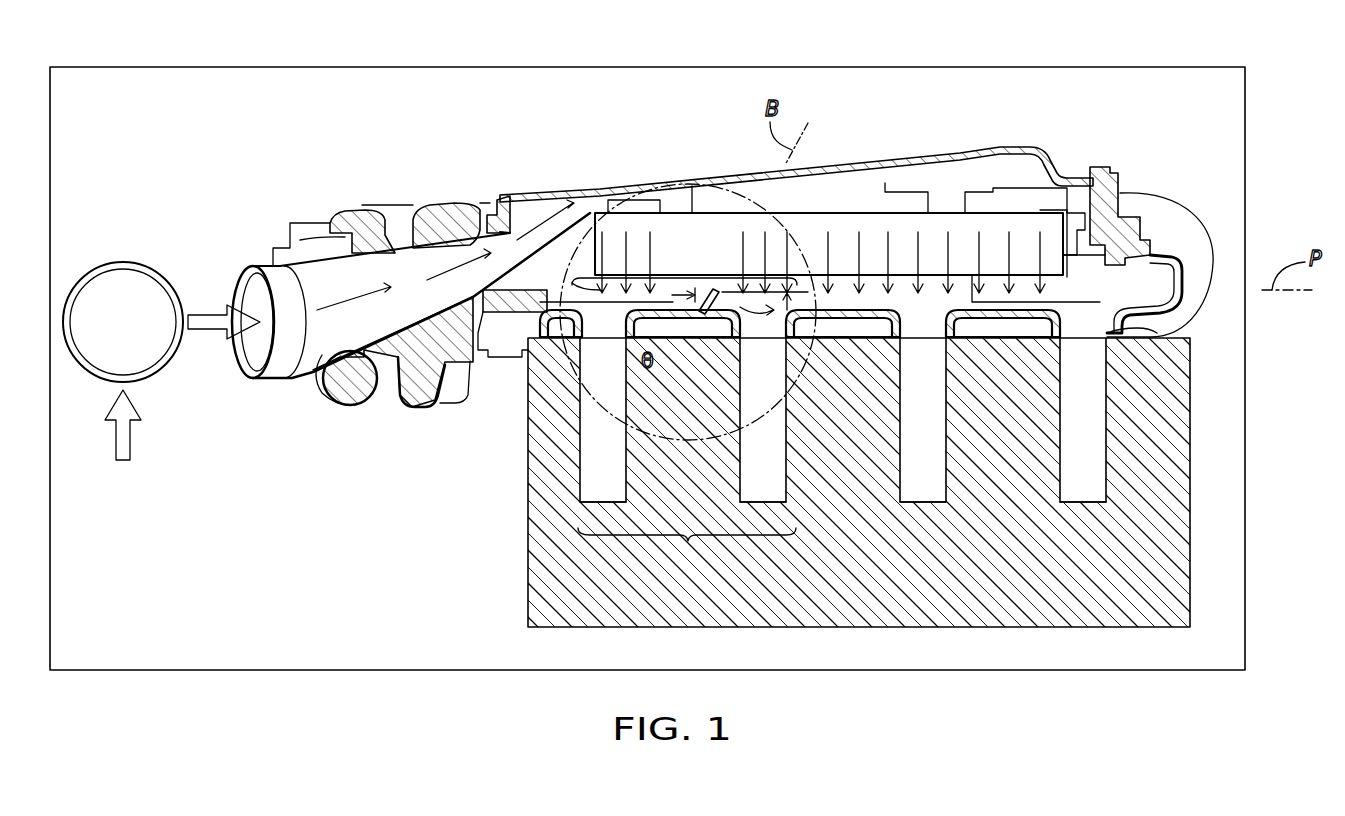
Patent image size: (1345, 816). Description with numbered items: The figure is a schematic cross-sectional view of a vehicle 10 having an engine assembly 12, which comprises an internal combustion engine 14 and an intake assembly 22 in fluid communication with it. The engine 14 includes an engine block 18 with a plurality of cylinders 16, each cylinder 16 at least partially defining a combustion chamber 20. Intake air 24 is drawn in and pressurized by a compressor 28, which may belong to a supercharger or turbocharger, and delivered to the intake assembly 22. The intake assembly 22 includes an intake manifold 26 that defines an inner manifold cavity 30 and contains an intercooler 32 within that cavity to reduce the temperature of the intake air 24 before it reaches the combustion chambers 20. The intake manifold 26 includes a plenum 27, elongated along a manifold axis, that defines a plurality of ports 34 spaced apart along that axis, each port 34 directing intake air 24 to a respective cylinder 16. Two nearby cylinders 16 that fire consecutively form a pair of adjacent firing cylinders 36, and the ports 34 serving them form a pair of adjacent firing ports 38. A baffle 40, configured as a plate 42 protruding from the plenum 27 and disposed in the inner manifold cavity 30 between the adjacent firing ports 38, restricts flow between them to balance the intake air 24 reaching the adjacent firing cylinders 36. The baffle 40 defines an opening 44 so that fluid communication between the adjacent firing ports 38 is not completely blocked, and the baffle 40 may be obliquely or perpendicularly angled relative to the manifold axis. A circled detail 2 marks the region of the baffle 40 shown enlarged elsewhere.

The vehicle 10 is at (756, 62).
The engine assembly 12 is at (668, 118).
The internal combustion engine 14 is at (518, 570).
The cylinders 16 is at (626, 487).
The engine block 18 is at (1193, 558).
The combustion chamber 20 is at (845, 433).
The intake assembly 22 is at (995, 132).
The intake air 24 is at (217, 313).
The intake manifold 26 is at (1213, 262).
The plenum 27 is at (1140, 328).
The compressor 28 is at (123, 262).
The inner manifold cavity 30 is at (873, 183).
The intercooler 32 is at (957, 227).
The ports 34 is at (583, 336).
The pair of adjacent firing cylinders 36 is at (687, 547).
The pair of adjacent firing ports 38 is at (688, 275).
The baffle 40 is at (698, 290).
The plate 42 is at (712, 312).
The opening 44 is at (789, 258).
The section detail circle 2 is at (803, 373).